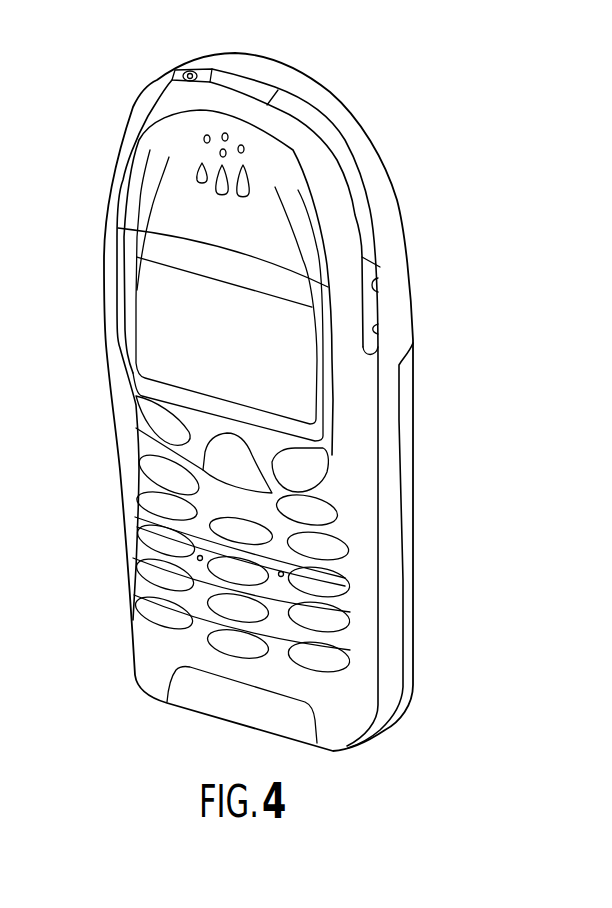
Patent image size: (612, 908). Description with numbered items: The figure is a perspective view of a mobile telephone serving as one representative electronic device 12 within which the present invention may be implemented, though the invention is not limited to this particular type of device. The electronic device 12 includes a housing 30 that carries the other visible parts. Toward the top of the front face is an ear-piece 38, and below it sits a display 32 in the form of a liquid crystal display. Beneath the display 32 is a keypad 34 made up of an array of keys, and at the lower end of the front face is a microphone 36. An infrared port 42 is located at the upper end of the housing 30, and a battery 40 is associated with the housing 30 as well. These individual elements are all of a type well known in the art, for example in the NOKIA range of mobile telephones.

The electronic device 12 is at (357, 63).
The housing 30 is at (388, 193).
The display 32 is at (300, 377).
The keypad 34 is at (317, 663).
The microphone 36 is at (188, 697).
The ear-piece 38 is at (205, 157).
The battery 40 is at (410, 644).
The infrared port 42 is at (243, 86).